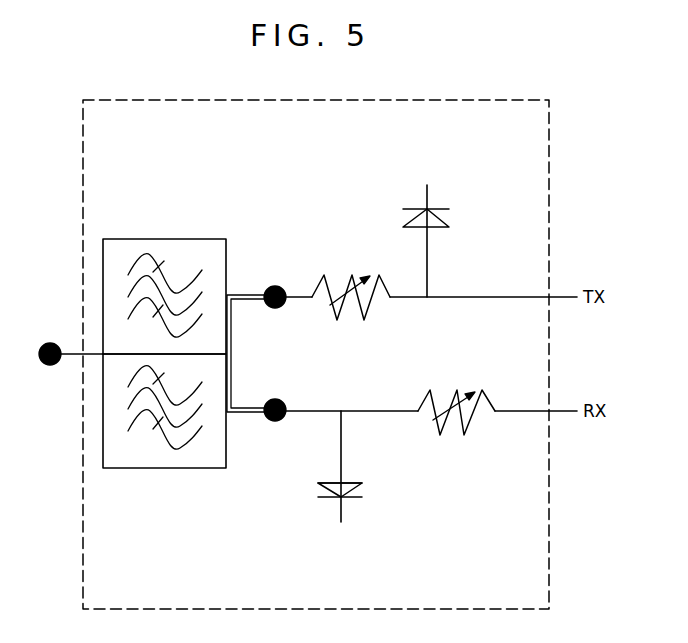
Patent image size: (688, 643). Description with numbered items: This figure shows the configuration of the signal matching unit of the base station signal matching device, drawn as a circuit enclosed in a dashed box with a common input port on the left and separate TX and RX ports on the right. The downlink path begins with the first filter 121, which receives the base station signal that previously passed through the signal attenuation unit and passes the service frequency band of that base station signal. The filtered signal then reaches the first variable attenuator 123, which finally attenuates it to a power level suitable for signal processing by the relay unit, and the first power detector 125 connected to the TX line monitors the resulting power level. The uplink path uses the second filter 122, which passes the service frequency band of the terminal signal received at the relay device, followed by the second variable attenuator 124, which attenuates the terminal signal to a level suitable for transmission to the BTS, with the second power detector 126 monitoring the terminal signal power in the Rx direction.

The first filter 121 is at (103, 293).
The second filter 122 is at (103, 430).
The first variable attenuator 123 is at (323, 283).
The second variable attenuator 124 is at (470, 418).
The first power detector 125 is at (445, 228).
The second power detector 126 is at (360, 484).